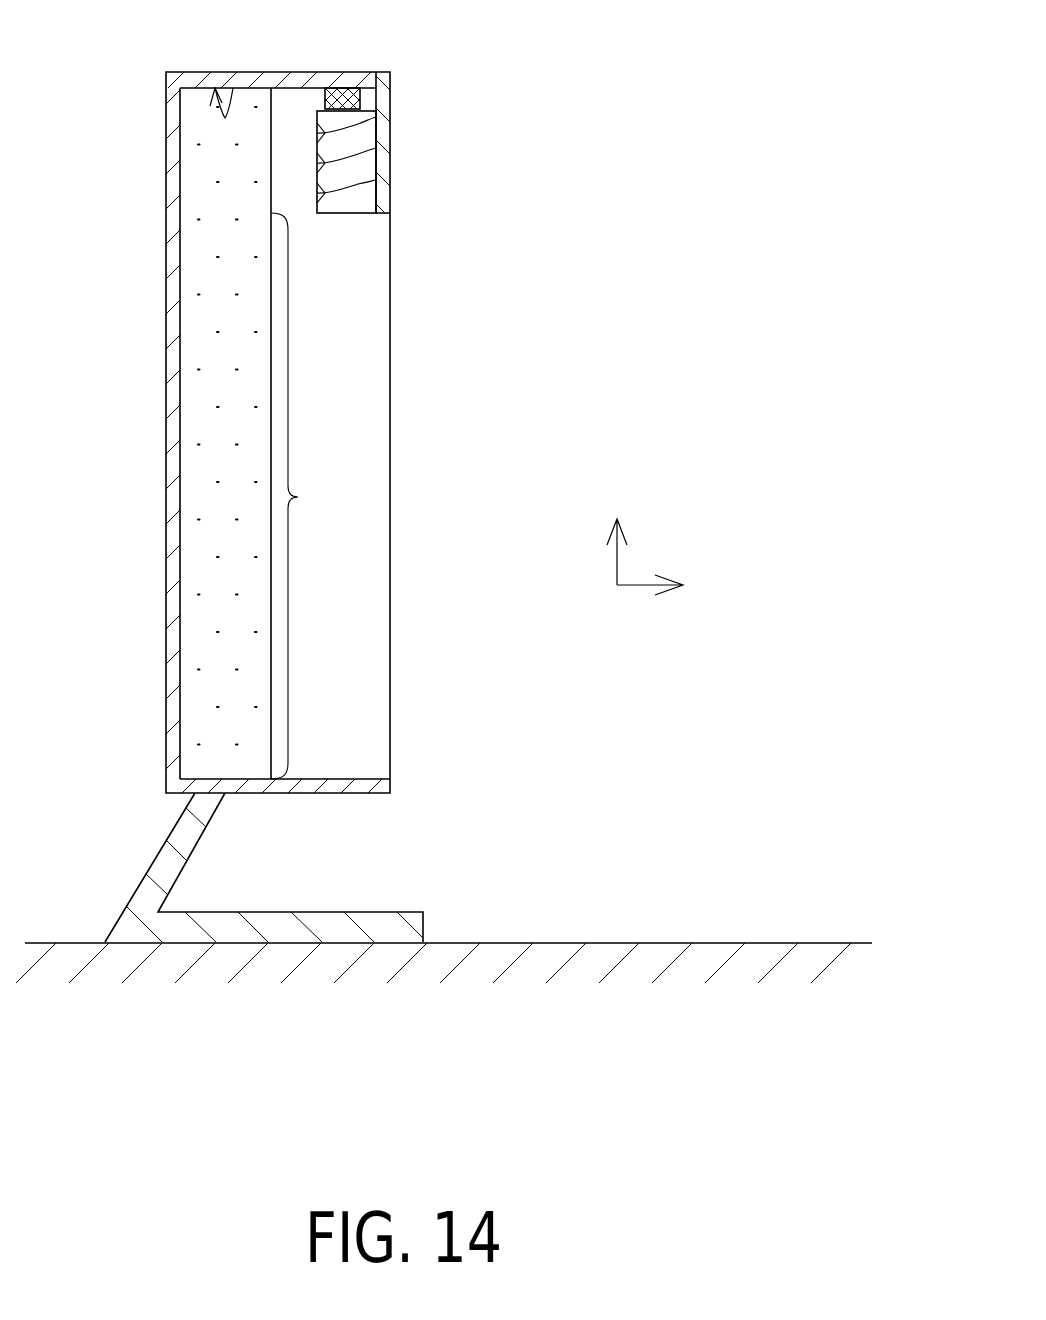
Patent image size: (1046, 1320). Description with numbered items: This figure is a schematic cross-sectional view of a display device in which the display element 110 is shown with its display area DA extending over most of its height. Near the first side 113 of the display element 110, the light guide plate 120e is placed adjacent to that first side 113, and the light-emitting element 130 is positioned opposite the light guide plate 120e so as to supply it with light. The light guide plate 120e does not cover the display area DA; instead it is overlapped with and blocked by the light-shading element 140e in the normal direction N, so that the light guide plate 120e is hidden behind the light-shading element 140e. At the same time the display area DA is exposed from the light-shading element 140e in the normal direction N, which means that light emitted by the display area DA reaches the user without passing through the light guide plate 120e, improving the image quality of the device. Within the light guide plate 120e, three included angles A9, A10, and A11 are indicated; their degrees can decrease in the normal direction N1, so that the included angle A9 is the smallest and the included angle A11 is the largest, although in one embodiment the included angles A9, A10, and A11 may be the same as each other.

The display element 110 is at (195, 102).
The first side 113 is at (233, 88).
The light-emitting element 130 is at (347, 90).
The light-shading element 140e is at (382, 97).
The light guide plate 120e is at (358, 200).
The included angle A9 is at (376, 117).
The included angle A10 is at (376, 148).
The included angle A11 is at (376, 180).
The display area DA is at (306, 496).
The normal direction N1 is at (615, 538).
The normal direction N is at (661, 585).